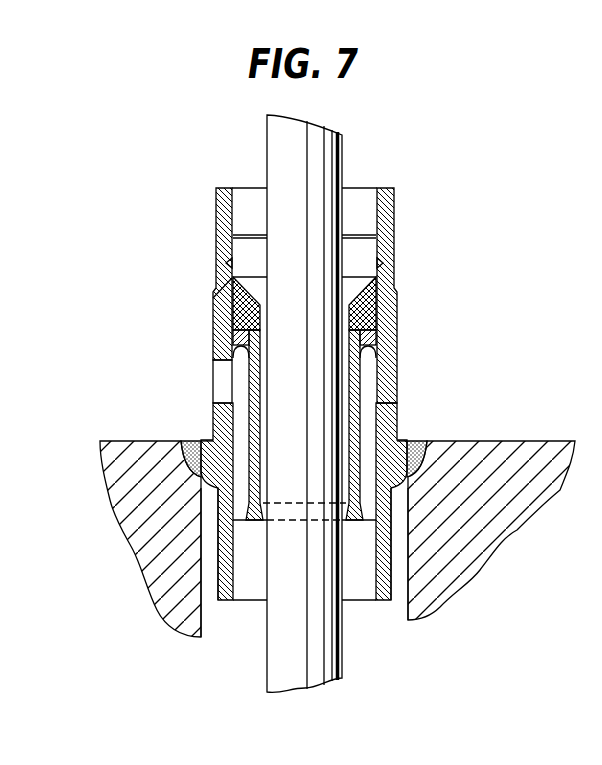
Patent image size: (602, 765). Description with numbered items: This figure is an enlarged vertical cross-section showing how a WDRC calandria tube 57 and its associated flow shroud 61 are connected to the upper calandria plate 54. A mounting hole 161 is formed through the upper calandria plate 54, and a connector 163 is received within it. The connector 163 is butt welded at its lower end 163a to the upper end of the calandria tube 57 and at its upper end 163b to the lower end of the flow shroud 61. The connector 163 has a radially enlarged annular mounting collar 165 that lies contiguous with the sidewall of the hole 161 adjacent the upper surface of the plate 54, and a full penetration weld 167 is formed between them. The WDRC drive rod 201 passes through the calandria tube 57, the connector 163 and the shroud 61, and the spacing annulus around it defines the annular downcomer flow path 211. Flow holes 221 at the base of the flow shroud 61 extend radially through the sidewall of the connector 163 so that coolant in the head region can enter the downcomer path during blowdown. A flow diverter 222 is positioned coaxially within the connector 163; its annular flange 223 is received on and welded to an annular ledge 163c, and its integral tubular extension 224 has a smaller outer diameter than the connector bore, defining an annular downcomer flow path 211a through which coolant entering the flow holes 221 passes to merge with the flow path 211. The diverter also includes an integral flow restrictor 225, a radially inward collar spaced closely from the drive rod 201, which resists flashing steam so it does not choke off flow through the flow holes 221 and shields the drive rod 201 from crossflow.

The WDRC drive rod 201 is at (348, 148).
The annular downcomer flow path 211 is at (363, 203).
The flow shroud 61 is at (396, 238).
The upper end of connector 163b is at (392, 264).
The flow restrictor 225 is at (213, 298).
The flow diverter 222 is at (370, 319).
The annular flange 223 is at (377, 329).
The annular ledge 163c is at (377, 336).
The tubular extension 224 is at (401, 357).
The flow holes 221 is at (207, 368).
The connector 163 is at (438, 386).
The annular downcomer flow path 211a is at (403, 399).
The lower end of connector 163a is at (374, 520).
The full penetration weld 167 is at (422, 441).
The annular mounting collar 165 is at (410, 440).
The upper calandria plate 54 is at (513, 444).
The mounting hole 161 is at (405, 574).
The calandria tube 57 is at (381, 586).